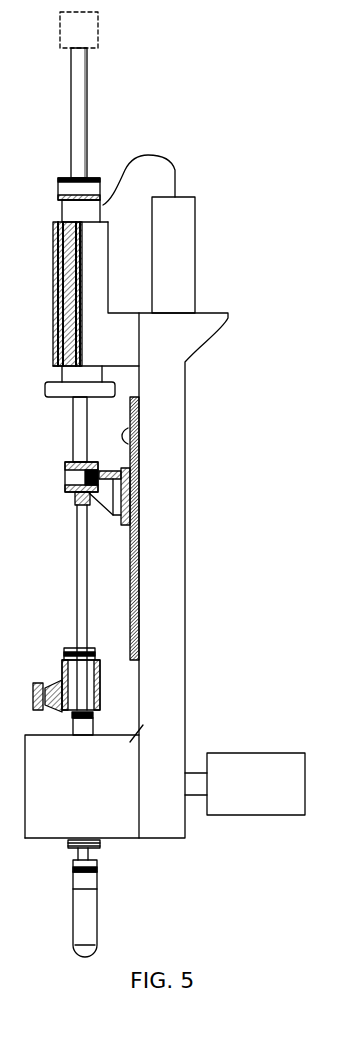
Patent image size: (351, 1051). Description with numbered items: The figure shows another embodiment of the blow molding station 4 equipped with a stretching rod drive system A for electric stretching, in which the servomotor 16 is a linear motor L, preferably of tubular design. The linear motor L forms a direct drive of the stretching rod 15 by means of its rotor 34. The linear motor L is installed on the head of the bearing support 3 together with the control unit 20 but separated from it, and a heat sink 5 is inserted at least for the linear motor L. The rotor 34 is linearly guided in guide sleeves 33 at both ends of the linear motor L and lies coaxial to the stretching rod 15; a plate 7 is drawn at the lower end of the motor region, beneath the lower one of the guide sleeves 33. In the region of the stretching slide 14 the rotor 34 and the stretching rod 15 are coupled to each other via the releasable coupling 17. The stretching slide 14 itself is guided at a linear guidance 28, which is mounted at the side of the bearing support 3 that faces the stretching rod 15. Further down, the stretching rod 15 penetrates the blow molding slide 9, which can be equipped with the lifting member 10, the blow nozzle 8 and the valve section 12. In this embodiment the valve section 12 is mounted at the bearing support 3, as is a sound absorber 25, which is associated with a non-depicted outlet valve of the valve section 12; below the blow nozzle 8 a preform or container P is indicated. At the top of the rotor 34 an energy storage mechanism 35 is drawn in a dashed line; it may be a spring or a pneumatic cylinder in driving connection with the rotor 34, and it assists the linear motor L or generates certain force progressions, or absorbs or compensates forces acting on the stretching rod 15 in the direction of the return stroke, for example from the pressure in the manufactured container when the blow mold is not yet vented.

The bearing support 3 is at (178, 405).
The blow molding station 4 is at (288, 72).
The heat sink 5 is at (130, 323).
The plate 7 is at (45, 390).
The blow nozzle 8 is at (100, 841).
The blow molding slide 9 is at (88, 680).
The lifting member 10 is at (46, 686).
The valve section 12 is at (125, 738).
The stretching slide 14 is at (135, 500).
The stretching rod 15 is at (77, 566).
The servomotor 16 is at (72, 210).
The releasable coupling 17 is at (65, 480).
The control unit 20 is at (195, 213).
The sound absorber 25 is at (258, 752).
The linear guidance 28 is at (140, 447).
The guide sleeves 33 is at (97, 177).
The rotor 34 is at (88, 70).
The energy storage mechanism 35 is at (99, 22).
The linear motor L is at (103, 218).
The stretching rod drive system A is at (212, 528).
The pipette P is at (90, 926).